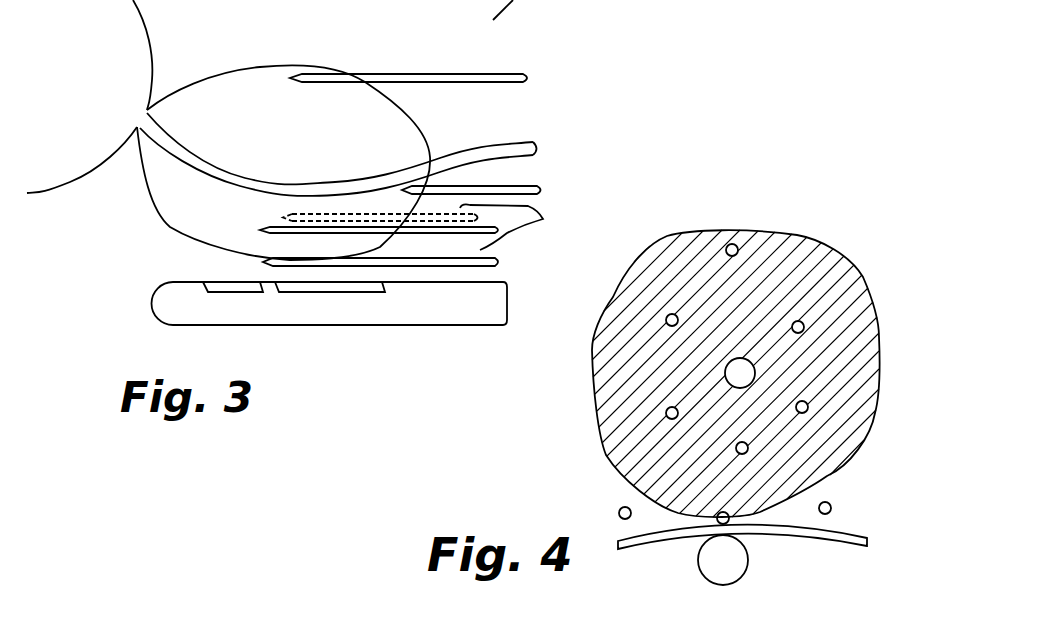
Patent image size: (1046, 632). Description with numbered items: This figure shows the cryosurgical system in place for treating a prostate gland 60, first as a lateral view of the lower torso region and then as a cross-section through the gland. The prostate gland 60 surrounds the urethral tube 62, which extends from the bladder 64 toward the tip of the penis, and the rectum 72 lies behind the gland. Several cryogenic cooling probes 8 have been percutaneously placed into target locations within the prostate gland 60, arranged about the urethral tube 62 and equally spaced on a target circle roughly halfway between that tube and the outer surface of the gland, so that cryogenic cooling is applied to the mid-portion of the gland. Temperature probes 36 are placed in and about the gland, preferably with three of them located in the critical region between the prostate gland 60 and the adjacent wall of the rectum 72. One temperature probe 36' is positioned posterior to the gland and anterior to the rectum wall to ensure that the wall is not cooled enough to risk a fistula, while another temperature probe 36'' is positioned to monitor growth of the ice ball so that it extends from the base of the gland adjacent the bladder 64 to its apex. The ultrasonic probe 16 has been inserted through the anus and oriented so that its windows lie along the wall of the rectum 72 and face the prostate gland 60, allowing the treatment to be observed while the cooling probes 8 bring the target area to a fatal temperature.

In FIG. 4, the cryogenic cooling probe 8 is at (677, 316).
In FIG. 3, the ultrasonic probe 16 is at (452, 317).
In FIG. 4, the ultrasonic probe 16 is at (748, 555).
In FIG. 3, the temperature probe 36 is at (408, 61).
In FIG. 4, the temperature probe 36 is at (721, 217).
In FIG. 3, the temperature probe 36' is at (425, 235).
In FIG. 4, the temperature probe 36' is at (722, 499).
In FIG. 3, the temperature probe 36'' is at (497, 178).
In FIG. 3, the prostate gland 60 is at (300, 134).
In FIG. 4, the prostate gland 60 is at (600, 353).
In FIG. 3, the urethral tube 62 is at (498, 140).
In FIG. 4, the urethral tube 62 is at (725, 375).
In FIG. 3, the bladder 64 is at (92, 96).
In FIG. 3, the rectum 72 is at (172, 262).